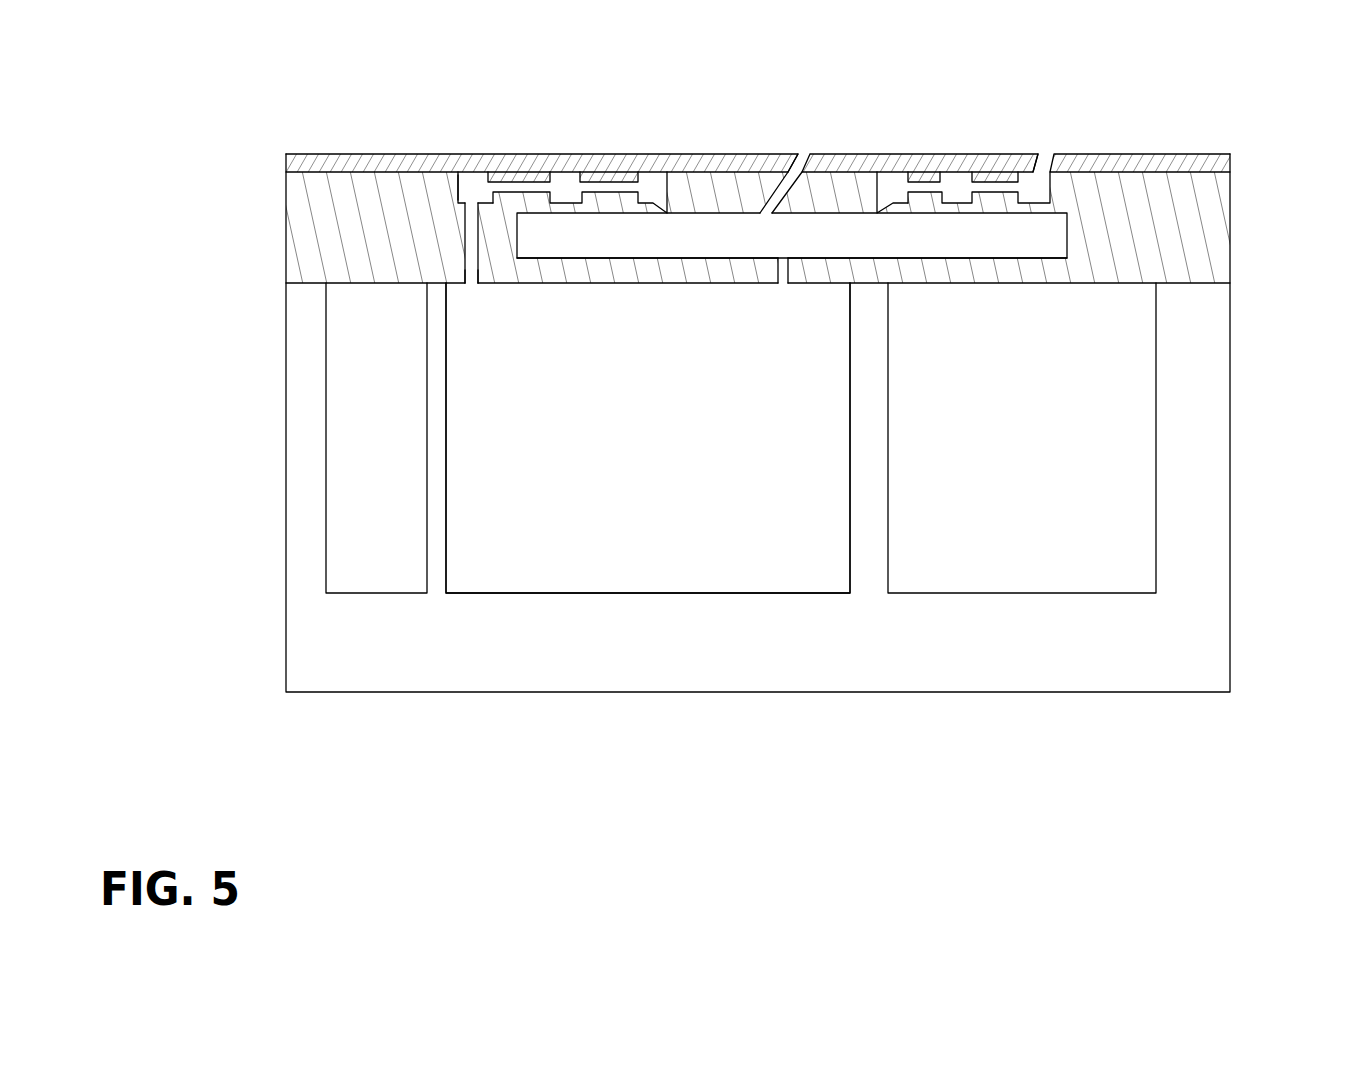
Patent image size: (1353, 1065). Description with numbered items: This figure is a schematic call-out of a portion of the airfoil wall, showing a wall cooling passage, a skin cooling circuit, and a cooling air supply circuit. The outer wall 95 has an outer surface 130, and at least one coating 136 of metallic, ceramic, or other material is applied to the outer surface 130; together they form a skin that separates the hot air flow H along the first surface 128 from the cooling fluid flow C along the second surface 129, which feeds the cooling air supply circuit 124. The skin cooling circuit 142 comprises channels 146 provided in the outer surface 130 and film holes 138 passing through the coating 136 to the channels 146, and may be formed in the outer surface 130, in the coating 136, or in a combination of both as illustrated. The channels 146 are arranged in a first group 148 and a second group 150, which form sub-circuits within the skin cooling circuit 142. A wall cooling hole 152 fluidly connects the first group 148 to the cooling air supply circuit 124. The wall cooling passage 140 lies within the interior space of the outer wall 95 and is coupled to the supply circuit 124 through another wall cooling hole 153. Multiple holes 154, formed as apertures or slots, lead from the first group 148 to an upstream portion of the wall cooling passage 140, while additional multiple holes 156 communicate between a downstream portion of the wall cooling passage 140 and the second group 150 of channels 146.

The outer wall 95 is at (1237, 240).
The cooling air supply circuit 124 is at (652, 456).
The first surface 128 is at (327, 154).
The second surface 129 is at (610, 287).
The outer surface 130 is at (1230, 173).
The coating 136 is at (1197, 168).
The film hole 138 is at (802, 157).
The wall cooling passage 140 is at (1087, 240).
The skin cooling circuit 142 is at (453, 187).
The channel 146 is at (650, 187).
The first group of multiple channels 148 is at (680, 100).
The second group of multiple channels 150 is at (1065, 87).
The wall cooling hole 152 is at (476, 258).
The wall cooling hole 153 is at (782, 268).
The multiple holes 154 is at (672, 211).
The multiple holes 156 is at (875, 203).
The hot air flow H is at (468, 144).
The cooling fluid flow C is at (472, 283).